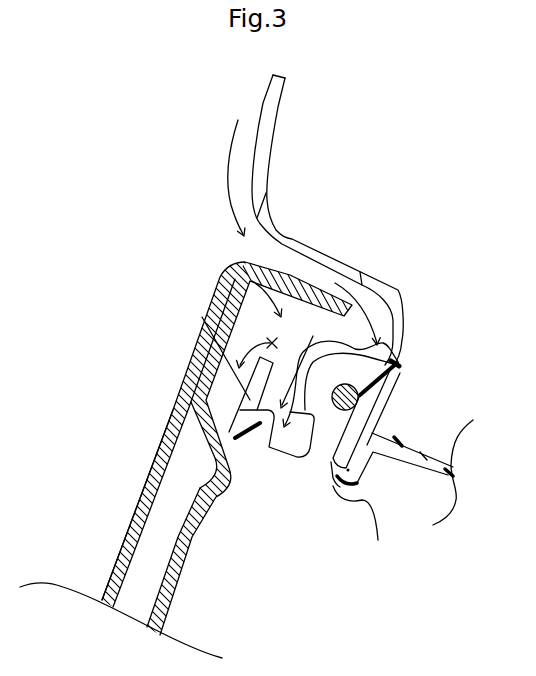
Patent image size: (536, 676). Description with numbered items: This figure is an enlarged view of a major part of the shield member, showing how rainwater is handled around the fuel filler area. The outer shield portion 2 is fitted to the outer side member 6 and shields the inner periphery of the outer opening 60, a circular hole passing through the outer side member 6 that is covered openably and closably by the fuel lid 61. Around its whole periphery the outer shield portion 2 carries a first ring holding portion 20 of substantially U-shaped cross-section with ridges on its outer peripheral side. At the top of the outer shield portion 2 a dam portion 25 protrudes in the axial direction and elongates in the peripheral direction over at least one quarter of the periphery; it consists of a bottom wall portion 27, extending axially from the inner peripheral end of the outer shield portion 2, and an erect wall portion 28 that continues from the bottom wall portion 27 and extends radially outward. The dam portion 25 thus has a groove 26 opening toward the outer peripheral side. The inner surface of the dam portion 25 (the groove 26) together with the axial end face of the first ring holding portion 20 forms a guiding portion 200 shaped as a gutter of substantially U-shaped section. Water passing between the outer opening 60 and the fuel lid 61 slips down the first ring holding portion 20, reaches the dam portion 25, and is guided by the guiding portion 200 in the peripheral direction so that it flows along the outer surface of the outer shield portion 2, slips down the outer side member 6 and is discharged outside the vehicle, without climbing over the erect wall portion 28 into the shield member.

The outer shield portion 2 is at (268, 424).
The outer side member 6 is at (266, 103).
The first ring holding portion 20 is at (372, 354).
The dam portion 25 is at (267, 448).
The groove 26 is at (240, 410).
The bottom wall portion 27 is at (240, 443).
The erect wall portion 28 is at (203, 327).
The outer opening 60 is at (246, 539).
The fuel lid 61 is at (190, 367).
The guiding portion 200 is at (300, 460).